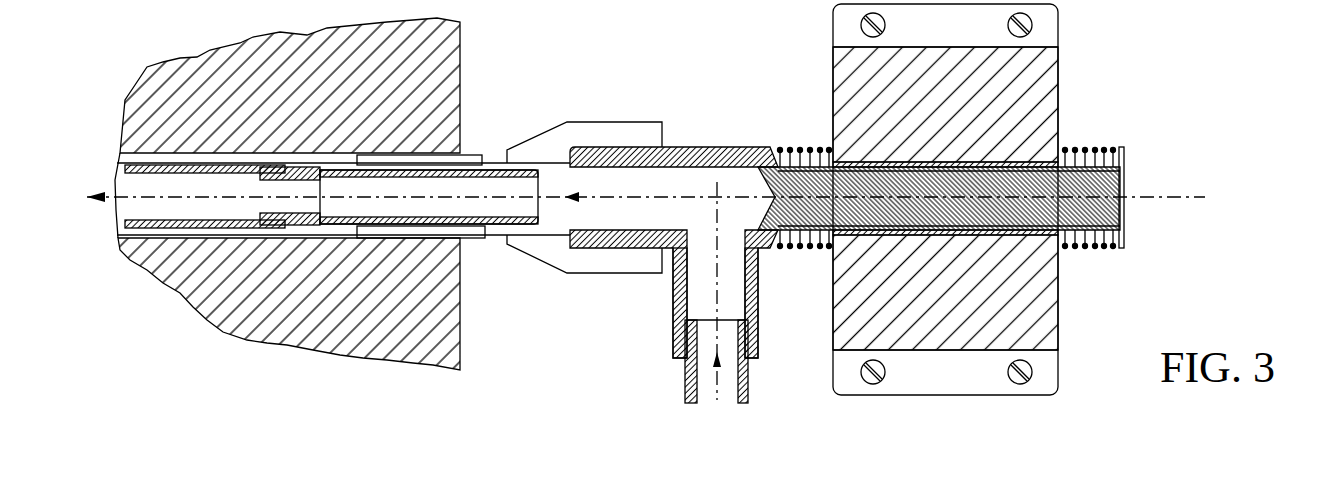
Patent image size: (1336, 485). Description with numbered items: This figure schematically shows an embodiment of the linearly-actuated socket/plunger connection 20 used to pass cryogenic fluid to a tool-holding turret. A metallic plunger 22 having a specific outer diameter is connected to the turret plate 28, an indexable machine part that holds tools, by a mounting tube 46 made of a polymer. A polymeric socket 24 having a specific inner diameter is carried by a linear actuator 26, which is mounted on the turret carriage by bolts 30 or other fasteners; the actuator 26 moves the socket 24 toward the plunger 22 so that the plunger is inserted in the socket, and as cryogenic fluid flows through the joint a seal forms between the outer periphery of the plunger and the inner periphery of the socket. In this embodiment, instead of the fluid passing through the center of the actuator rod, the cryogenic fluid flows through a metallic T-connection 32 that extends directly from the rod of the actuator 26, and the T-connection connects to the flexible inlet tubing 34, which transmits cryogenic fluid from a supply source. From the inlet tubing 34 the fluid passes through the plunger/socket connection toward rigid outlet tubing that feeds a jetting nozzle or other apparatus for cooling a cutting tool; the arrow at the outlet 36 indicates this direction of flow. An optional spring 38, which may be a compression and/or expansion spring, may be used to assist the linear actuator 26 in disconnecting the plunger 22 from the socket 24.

The linearly-actuated socket/plunger connection 20 is at (1244, 110).
The metallic plunger 22 is at (493, 165).
The polymeric socket 24 is at (605, 131).
The linear actuator 26 is at (961, 199).
The turret plate 28 is at (315, 335).
The bolts 30 is at (872, 370).
The T-connection 32 is at (673, 328).
The inlet tubing 34 is at (748, 388).
The outlet flow 36 is at (114, 168).
The spring 38 is at (1093, 148).
The mounting tube 46 is at (486, 238).